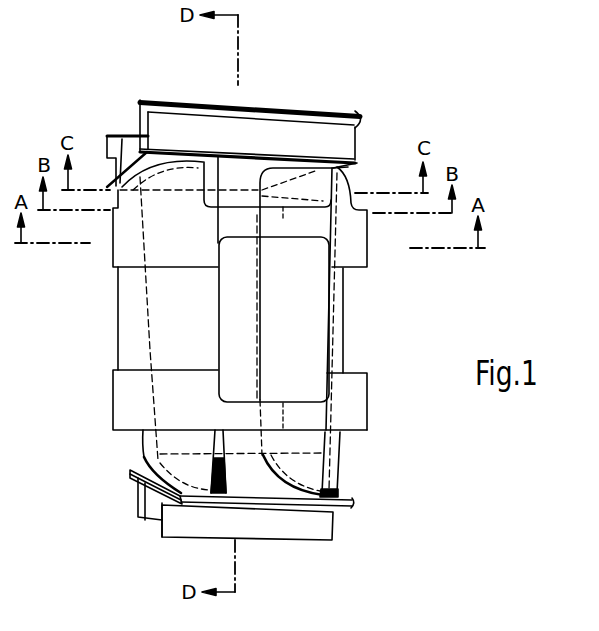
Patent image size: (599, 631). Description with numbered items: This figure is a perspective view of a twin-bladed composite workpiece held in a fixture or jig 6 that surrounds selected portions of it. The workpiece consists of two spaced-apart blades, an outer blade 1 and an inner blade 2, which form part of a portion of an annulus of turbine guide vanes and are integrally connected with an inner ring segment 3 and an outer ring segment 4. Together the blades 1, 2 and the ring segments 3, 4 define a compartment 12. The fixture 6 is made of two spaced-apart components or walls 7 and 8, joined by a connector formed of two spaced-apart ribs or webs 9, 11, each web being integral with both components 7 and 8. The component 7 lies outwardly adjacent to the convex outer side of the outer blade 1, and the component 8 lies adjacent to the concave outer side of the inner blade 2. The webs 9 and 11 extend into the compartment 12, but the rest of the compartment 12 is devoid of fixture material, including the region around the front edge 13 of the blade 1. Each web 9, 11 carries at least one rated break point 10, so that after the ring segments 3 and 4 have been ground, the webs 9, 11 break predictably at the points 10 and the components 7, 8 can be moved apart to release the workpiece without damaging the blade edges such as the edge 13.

The outer blade 1 is at (229, 467).
The inner blade 2 is at (265, 458).
The inner ring segment 3 is at (308, 518).
The outer ring segment 4 is at (298, 135).
The fixture 6 is at (112, 302).
The component 7 is at (127, 402).
The component 8 is at (351, 400).
The web 9 is at (240, 227).
The rated break point 10 is at (283, 217).
The web 11 is at (240, 410).
The compartment 12 is at (237, 341).
The front edge 13 is at (205, 200).